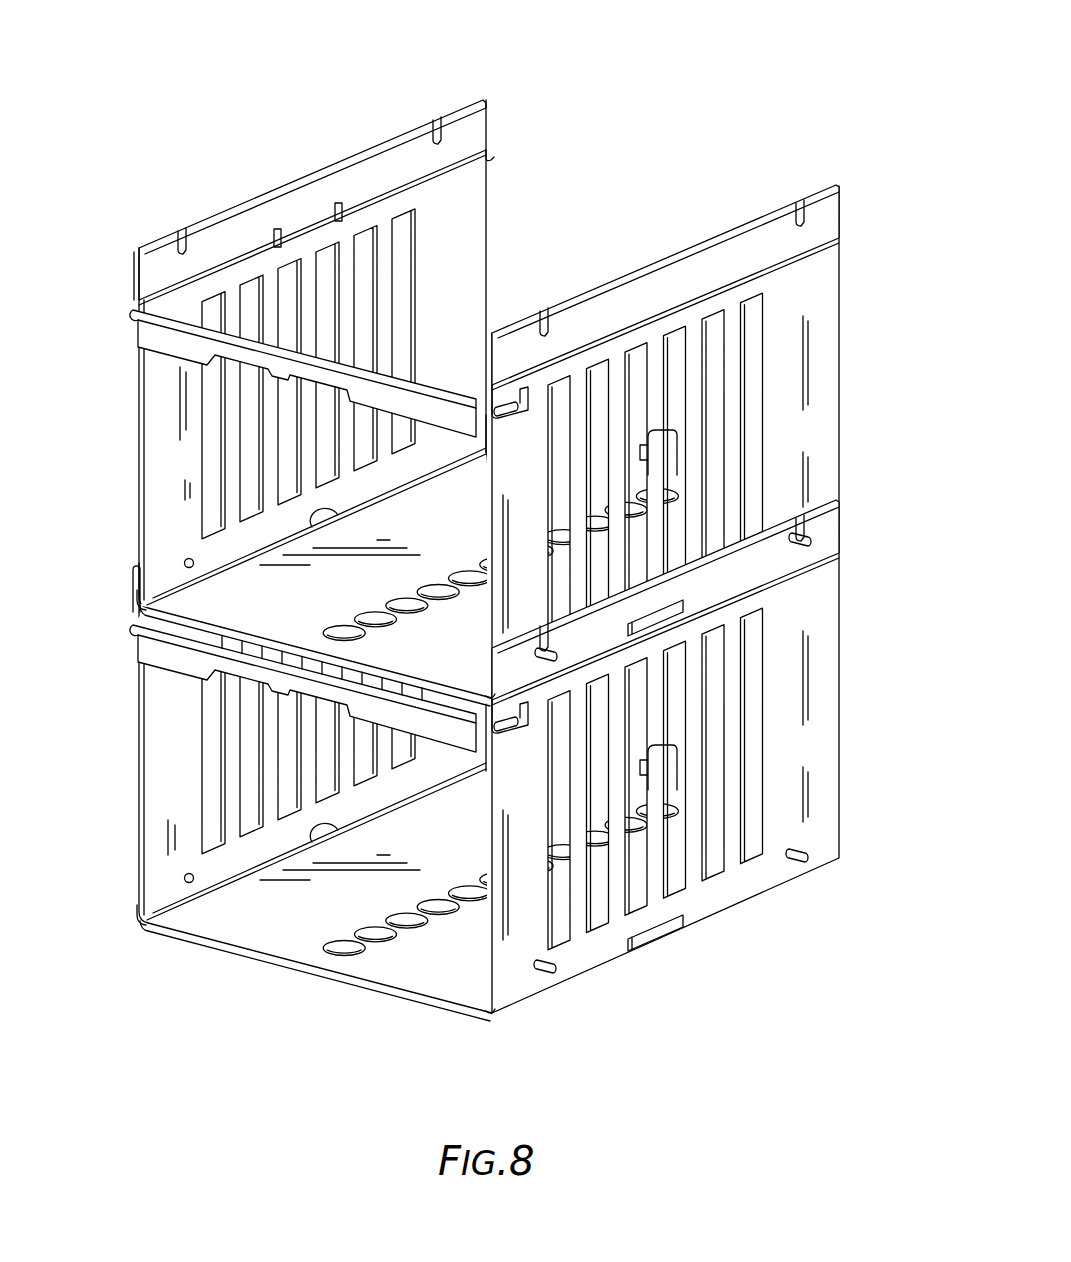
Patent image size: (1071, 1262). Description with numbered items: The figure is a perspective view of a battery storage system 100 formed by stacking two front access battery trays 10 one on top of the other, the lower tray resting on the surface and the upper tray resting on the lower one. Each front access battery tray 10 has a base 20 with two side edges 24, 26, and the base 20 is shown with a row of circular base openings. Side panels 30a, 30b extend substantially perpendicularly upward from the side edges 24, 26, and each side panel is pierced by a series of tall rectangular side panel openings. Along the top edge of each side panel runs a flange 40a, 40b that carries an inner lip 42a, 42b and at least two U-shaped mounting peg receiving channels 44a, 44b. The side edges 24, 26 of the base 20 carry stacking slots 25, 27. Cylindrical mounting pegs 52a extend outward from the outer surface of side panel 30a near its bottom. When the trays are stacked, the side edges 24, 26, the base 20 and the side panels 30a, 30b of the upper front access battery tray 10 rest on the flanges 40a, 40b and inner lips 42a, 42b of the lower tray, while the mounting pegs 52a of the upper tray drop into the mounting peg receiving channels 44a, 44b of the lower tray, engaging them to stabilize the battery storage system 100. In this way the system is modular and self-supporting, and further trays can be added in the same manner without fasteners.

The battery storage system 100 is at (177, 90).
The front access battery tray 10 is at (846, 280).
The base 20 is at (235, 612).
The side edge 24 is at (137, 603).
The stacking slot 25 is at (333, 517).
The side edge 26 is at (490, 705).
The stacking slot 27 is at (667, 612).
The side panel 30a is at (826, 385).
The side panel 30b is at (139, 424).
The flange 40a is at (846, 206).
The flange 40b is at (280, 178).
The inner lip 42a is at (492, 390).
The inner lip 42b is at (488, 148).
The mounting peg receiving channel 44a is at (797, 206).
The mounting peg receiving channel 44b is at (435, 118).
The mounting peg 52a is at (811, 538).